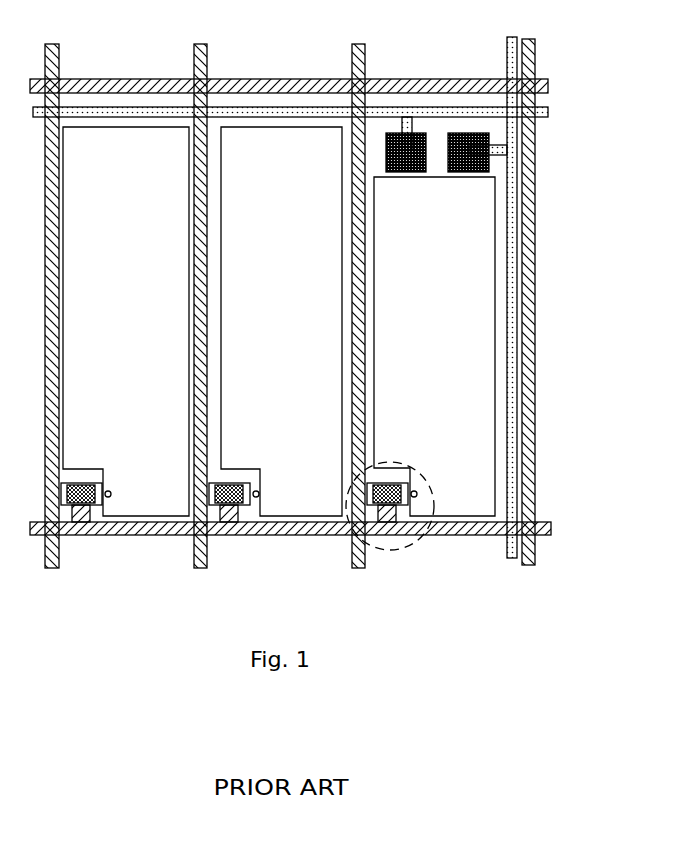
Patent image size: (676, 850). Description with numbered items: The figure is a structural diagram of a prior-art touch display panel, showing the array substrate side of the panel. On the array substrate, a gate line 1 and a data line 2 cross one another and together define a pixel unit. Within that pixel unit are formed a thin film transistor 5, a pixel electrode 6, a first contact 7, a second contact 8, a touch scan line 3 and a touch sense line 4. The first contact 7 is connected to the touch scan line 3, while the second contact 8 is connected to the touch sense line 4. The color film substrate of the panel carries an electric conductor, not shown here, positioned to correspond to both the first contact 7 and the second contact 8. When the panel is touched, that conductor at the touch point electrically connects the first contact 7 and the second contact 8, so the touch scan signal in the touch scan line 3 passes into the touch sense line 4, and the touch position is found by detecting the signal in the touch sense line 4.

The gate line 1 is at (545, 527).
The data line 2 is at (530, 257).
The touch scan line 3 is at (542, 113).
The touch sense line 4 is at (510, 323).
The thin film transistor 5 is at (437, 502).
The pixel electrode 6 is at (467, 423).
The first contact 7 is at (393, 133).
The second contact 8 is at (462, 133).